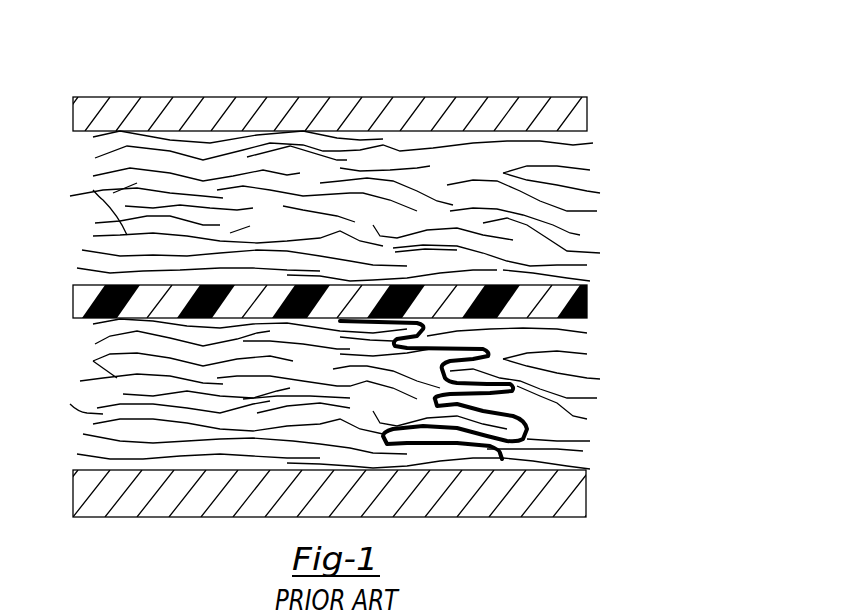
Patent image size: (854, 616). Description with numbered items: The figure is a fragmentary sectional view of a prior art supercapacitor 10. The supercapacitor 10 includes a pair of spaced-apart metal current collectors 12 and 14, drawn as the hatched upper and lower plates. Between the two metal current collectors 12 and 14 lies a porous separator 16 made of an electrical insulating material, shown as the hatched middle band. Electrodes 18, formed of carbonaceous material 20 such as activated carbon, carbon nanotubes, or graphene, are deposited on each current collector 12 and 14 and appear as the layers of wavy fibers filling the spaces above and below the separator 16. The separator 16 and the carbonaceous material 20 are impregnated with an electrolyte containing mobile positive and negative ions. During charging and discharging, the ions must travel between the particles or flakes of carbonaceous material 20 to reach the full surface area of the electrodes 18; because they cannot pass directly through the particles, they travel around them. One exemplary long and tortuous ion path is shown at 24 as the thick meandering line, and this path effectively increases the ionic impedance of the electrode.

The prior art supercapacitor 10 is at (121, 54).
The metal current collector 12 is at (162, 97).
The metal current collector 14 is at (115, 517).
The porous separator 16 is at (280, 287).
The electrodes 18 is at (566, 157).
The carbonaceous material 20 is at (93, 190).
The ion path 24 is at (553, 440).